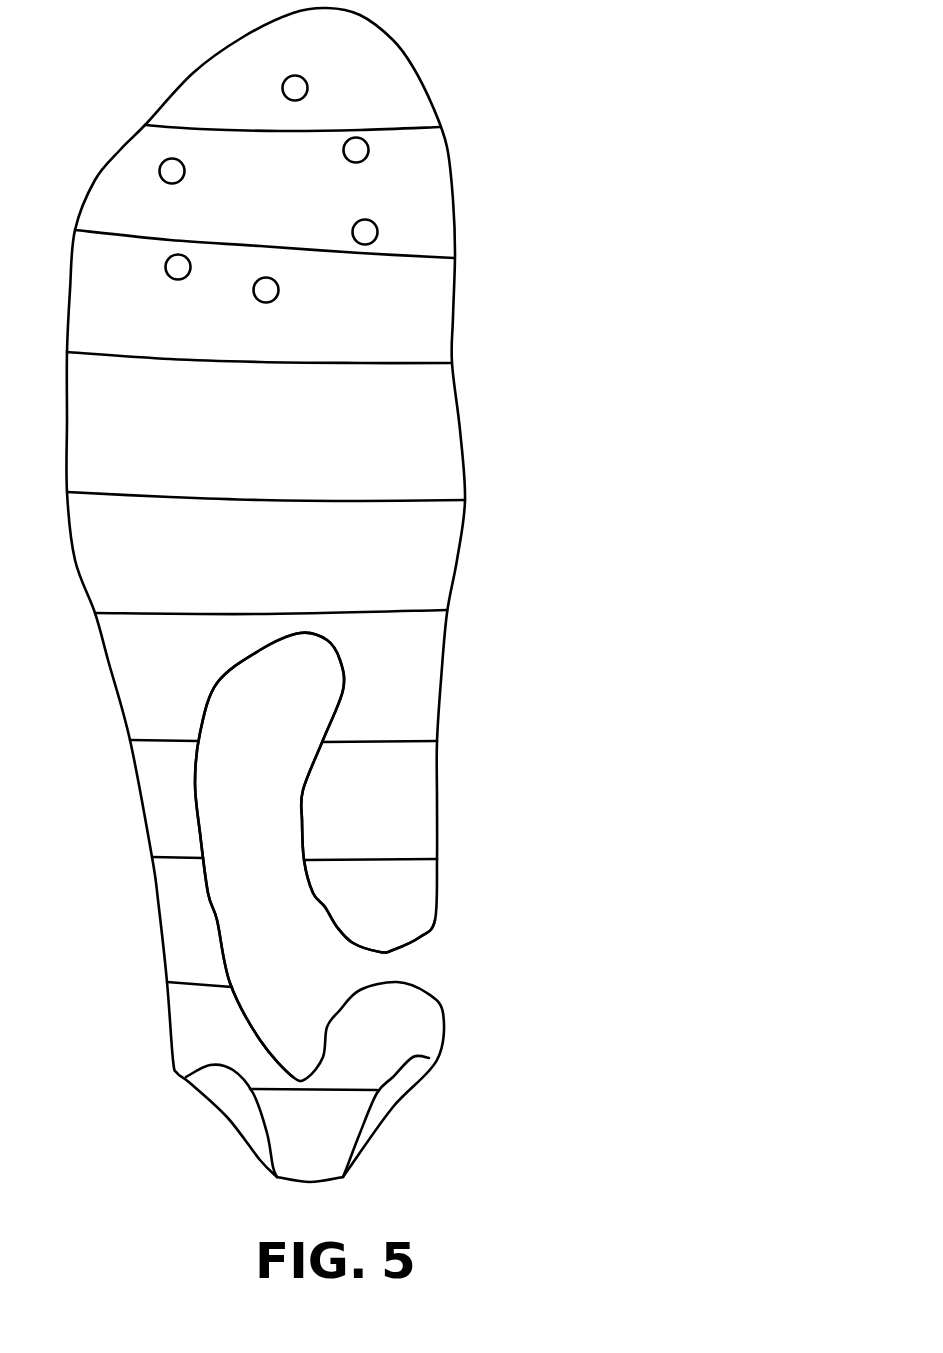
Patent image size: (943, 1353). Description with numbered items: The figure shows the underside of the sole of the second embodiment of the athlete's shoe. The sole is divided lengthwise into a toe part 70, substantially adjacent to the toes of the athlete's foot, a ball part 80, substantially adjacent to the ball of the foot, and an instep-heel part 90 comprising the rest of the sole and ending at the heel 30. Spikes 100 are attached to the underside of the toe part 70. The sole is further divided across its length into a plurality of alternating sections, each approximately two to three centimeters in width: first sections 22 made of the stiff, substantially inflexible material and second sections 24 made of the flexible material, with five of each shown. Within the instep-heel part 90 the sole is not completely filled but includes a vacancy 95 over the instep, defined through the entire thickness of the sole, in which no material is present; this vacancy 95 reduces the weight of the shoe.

The heel 30 is at (483, 1107).
The first sections 22 is at (177, 221).
The second sections 24 is at (247, 108).
The toe part 70 is at (400, 180).
The ball part 80 is at (408, 408).
The instep-heel part 90 is at (405, 702).
The vacancy 95 is at (286, 953).
The spikes 100 is at (296, 88).